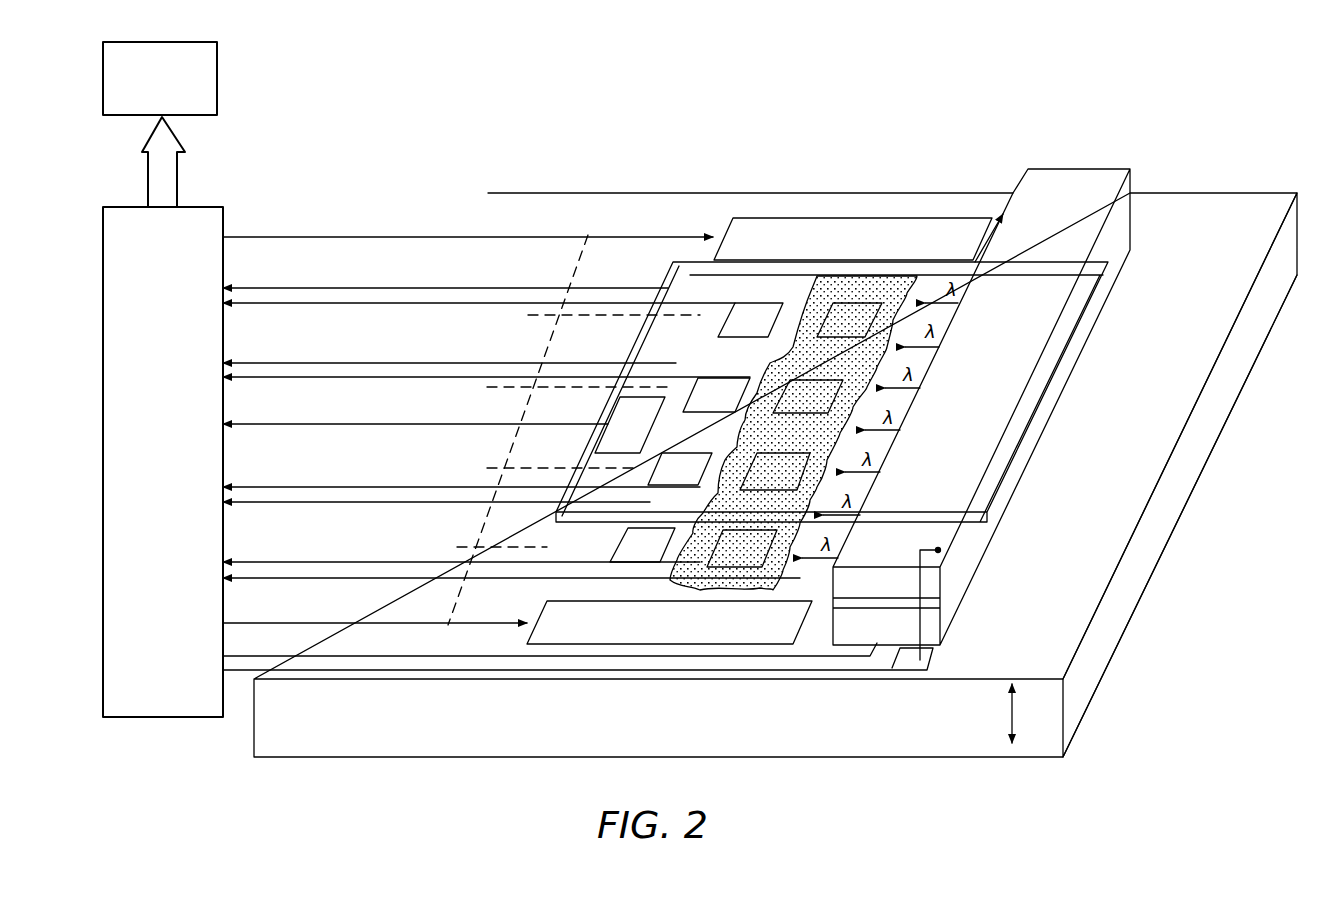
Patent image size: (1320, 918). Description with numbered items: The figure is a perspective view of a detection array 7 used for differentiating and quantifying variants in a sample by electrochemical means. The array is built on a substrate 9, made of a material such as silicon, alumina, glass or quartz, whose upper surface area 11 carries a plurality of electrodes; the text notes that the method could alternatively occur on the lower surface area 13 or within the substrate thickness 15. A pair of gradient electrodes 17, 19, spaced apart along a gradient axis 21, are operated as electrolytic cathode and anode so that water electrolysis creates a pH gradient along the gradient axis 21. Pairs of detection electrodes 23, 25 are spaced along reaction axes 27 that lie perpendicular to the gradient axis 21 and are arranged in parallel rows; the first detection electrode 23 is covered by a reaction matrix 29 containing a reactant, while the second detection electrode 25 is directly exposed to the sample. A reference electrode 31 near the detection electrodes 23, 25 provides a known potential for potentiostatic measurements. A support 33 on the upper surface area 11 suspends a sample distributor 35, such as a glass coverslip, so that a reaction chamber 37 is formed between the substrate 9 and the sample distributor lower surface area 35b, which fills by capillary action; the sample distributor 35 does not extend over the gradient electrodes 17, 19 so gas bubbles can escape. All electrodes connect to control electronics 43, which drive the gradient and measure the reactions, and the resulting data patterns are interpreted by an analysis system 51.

The detection array 7 is at (793, 125).
The substrate 9 is at (646, 732).
The substrate upper surface area 11 is at (1096, 608).
The lower surface area 13 is at (1100, 690).
The substrate thickness 15 is at (1012, 718).
The gradient electrode 17 is at (725, 637).
The gradient electrode 19 is at (908, 253).
The gradient axis 21 is at (530, 388).
The first detection electrode 23 is at (862, 335).
The second detection electrode 25 is at (766, 335).
The reaction axes 27 is at (597, 316).
The reaction matrix 29 is at (762, 571).
The reference electrode 31 is at (642, 432).
The support 33 is at (1068, 226).
The sample distributor 35 is at (1018, 452).
The sample distributor lower surface area 35b is at (552, 518).
The reaction chamber 37 is at (1047, 393).
The control electronics 43 is at (181, 452).
The analysis system 51 is at (219, 62).